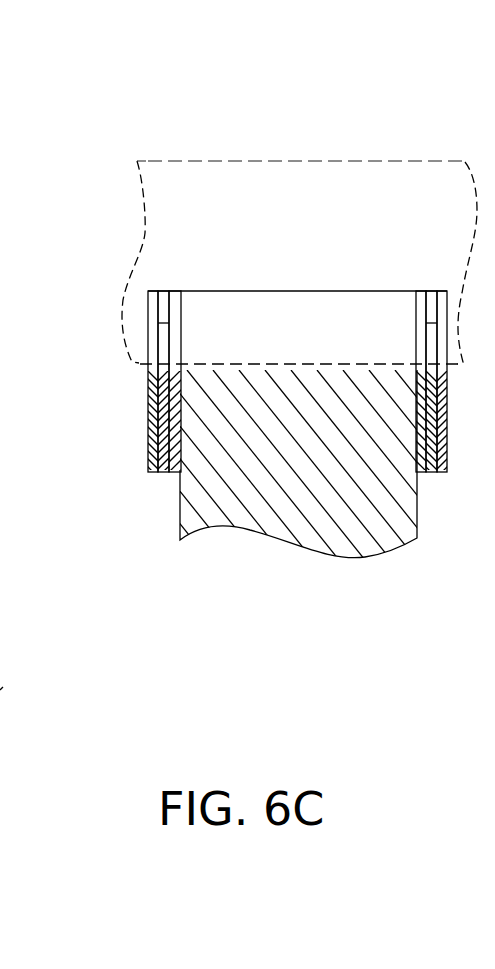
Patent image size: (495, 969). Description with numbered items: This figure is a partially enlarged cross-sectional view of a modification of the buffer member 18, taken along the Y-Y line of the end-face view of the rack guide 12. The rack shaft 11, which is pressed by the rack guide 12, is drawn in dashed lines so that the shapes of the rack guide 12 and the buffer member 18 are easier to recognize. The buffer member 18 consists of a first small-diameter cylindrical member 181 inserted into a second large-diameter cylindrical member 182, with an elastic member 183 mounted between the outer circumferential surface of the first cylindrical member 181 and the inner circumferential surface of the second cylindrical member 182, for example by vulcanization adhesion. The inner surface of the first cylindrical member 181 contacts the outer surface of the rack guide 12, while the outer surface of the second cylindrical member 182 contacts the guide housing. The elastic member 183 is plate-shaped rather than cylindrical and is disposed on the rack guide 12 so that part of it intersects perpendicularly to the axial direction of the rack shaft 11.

The rack shaft 11 is at (422, 160).
The rack guide 12 is at (387, 543).
The buffer member 18 is at (252, 474).
The first cylindrical member 181 is at (173, 473).
The second cylindrical member 182 is at (153, 473).
The elastic member 183 is at (163, 473).